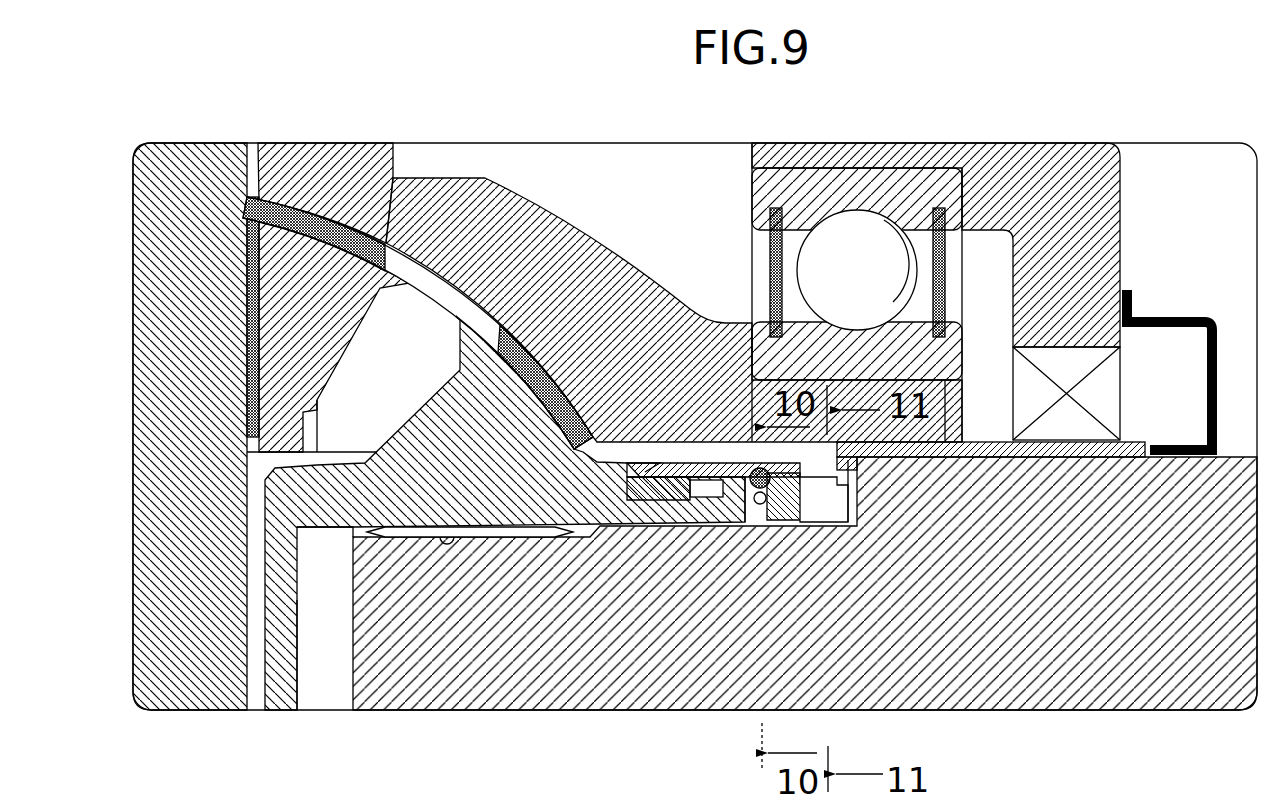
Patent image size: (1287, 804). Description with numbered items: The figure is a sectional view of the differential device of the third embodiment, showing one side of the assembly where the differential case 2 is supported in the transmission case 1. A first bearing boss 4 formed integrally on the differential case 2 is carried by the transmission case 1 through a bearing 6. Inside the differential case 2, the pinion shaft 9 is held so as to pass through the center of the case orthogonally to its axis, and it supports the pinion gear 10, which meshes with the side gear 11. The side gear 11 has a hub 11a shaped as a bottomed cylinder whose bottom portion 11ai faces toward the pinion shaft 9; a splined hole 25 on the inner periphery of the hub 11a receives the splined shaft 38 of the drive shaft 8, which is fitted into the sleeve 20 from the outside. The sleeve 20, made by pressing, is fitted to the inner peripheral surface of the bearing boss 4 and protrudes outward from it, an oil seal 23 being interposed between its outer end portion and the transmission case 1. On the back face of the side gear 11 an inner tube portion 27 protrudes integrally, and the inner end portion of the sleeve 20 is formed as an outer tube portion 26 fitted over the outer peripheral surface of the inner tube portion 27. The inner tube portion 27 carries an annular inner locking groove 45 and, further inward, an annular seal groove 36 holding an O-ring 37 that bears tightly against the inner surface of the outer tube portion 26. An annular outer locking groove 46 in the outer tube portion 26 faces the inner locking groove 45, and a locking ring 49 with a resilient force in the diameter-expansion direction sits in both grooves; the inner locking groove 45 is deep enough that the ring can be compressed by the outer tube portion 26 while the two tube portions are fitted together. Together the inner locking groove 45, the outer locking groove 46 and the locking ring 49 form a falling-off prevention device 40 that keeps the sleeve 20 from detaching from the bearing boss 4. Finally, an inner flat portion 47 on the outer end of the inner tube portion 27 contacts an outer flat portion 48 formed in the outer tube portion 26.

The transmission case 1 is at (1012, 167).
The differential case 2 is at (556, 238).
The pinion shaft 9 is at (200, 312).
The pinion gear 10 is at (332, 295).
The side gear 11 is at (520, 424).
The bearing 6 is at (885, 268).
The oil seal 23 is at (1095, 395).
The sleeve 20 is at (982, 440).
The first bearing boss 4 is at (945, 430).
The drive shaft 8 is at (1118, 642).
The splined shaft 38 is at (523, 530).
The splined hole 25 is at (455, 532).
The outer tube portion 26 is at (733, 465).
The O-ring 37 is at (700, 463).
The falling-off prevention device 40 is at (720, 497).
The seal groove 36 is at (705, 493).
The inner locking groove 45 is at (770, 505).
The locking ring 49 is at (758, 505).
The inner tube portion 27 is at (745, 500).
The inner flat portion 47 is at (790, 500).
The outer flat portion 48 is at (822, 508).
The outer locking groove 46 is at (753, 473).
The hub 11a is at (310, 540).
The bottom portion 11ai is at (300, 660).